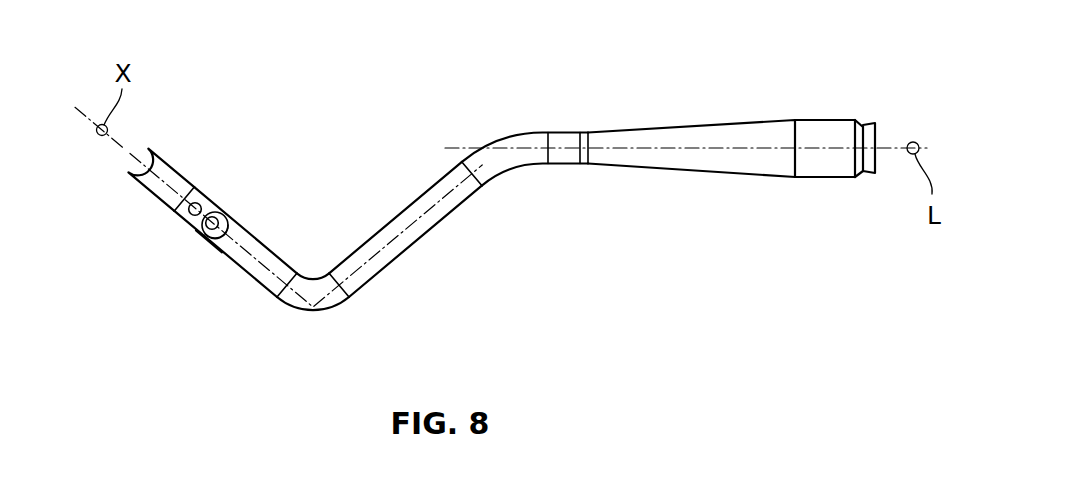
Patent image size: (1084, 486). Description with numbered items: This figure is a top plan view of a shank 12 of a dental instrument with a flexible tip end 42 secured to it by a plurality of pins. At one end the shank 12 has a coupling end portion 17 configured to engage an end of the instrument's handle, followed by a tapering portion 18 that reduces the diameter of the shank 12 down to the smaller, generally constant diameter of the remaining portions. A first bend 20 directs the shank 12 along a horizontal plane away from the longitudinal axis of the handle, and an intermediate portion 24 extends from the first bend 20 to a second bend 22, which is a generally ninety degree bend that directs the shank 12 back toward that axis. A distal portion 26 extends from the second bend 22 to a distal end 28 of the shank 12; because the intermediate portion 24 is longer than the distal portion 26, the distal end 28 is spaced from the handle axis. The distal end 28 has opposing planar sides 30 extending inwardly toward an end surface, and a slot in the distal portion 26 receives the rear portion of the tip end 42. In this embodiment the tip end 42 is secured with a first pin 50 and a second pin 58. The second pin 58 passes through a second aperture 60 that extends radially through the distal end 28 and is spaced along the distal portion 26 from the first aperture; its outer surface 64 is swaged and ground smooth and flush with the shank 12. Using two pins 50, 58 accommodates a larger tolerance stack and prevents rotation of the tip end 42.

The shank 12 is at (491, 223).
The coupling end portion 17 is at (871, 125).
The tapering portion 18 is at (663, 169).
The first bend 20 is at (508, 137).
The second bend 22 is at (313, 311).
The intermediate portion 24 is at (386, 266).
The distal portion 26 is at (252, 242).
The distal end 28 is at (226, 221).
The planar sides 30 is at (203, 203).
The tip end 42 is at (269, 207).
The pin 50 is at (178, 213).
The second pin 58 is at (207, 239).
The second aperture 60 is at (232, 232).
The outer surface 64 is at (213, 215).